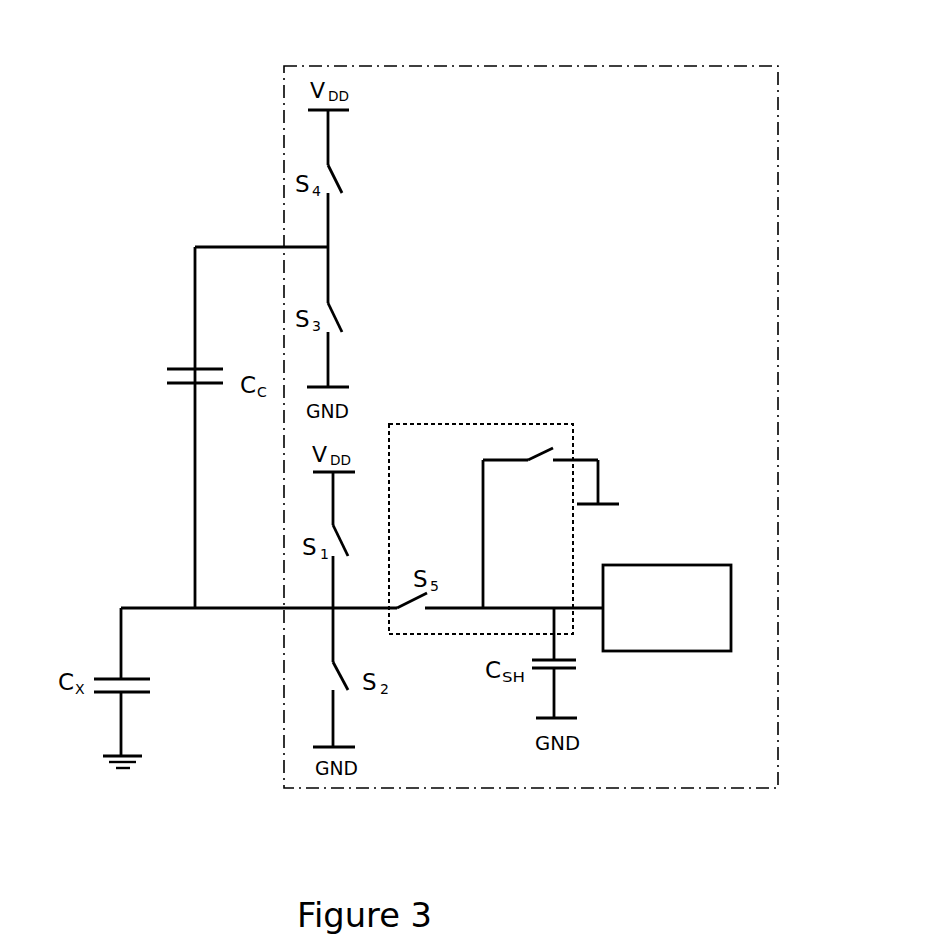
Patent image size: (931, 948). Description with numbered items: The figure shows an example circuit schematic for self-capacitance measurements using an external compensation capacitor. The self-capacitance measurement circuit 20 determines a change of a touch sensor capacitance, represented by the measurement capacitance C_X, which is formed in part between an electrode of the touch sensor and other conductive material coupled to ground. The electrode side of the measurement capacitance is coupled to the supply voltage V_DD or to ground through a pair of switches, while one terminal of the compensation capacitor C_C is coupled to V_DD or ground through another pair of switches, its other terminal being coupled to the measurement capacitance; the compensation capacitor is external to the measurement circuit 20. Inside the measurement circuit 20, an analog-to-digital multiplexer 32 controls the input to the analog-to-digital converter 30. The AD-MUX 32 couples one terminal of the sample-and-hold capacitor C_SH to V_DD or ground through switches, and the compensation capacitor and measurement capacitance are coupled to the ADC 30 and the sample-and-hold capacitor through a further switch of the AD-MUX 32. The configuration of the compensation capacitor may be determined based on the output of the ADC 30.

The self-capacitance measurement circuit 20 is at (485, 56).
The analog-to-digital multiplexer (AD-MUX) 32 is at (463, 390).
The analog-to-digital converter (ADC) 30 is at (681, 636).